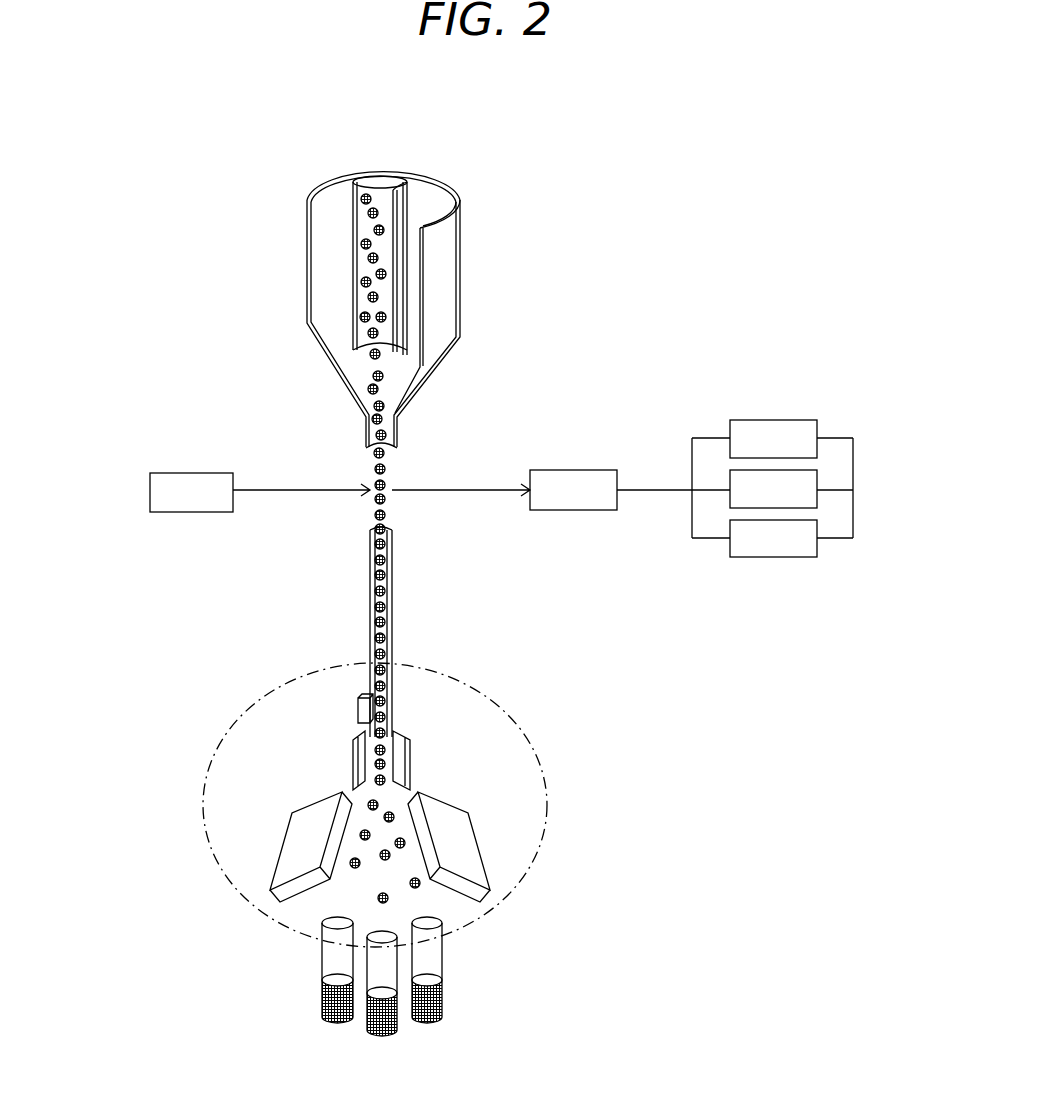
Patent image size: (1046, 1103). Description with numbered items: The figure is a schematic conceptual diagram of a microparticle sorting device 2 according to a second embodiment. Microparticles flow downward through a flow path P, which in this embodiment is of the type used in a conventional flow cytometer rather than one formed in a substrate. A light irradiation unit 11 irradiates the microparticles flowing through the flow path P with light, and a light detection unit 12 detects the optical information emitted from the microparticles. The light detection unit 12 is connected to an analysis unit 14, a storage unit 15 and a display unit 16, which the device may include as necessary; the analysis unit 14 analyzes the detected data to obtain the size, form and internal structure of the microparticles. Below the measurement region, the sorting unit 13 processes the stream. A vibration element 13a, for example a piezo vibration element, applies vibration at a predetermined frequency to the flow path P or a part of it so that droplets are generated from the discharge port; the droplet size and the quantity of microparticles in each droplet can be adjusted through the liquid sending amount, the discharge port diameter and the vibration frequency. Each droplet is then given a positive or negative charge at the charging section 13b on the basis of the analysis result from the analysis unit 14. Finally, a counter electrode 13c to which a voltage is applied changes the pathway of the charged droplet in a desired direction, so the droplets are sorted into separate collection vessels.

The microparticle sorting device 2 is at (77, 227).
The flow path P is at (372, 603).
The light irradiation unit 11 is at (260, 492).
The light detection unit 12 is at (622, 488).
The sorting unit 13 is at (817, 427).
The vibration element 13a is at (357, 710).
The charging section 13b is at (352, 762).
The counter electrode 13c is at (458, 853).
The analysis unit 14 is at (773, 439).
The storage unit 15 is at (773, 489).
The display unit 16 is at (773, 538).